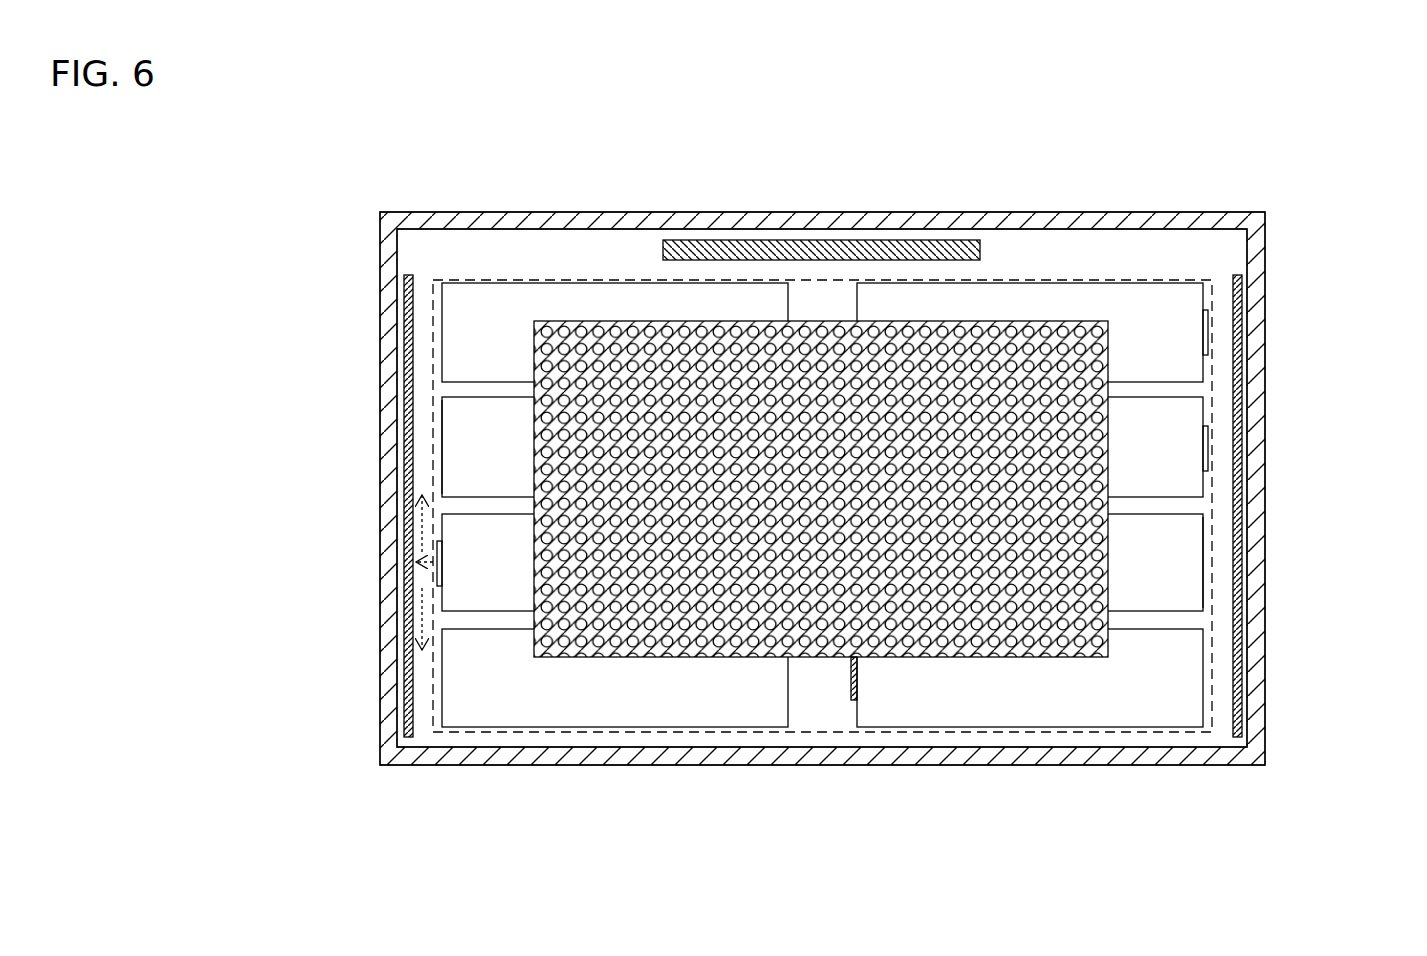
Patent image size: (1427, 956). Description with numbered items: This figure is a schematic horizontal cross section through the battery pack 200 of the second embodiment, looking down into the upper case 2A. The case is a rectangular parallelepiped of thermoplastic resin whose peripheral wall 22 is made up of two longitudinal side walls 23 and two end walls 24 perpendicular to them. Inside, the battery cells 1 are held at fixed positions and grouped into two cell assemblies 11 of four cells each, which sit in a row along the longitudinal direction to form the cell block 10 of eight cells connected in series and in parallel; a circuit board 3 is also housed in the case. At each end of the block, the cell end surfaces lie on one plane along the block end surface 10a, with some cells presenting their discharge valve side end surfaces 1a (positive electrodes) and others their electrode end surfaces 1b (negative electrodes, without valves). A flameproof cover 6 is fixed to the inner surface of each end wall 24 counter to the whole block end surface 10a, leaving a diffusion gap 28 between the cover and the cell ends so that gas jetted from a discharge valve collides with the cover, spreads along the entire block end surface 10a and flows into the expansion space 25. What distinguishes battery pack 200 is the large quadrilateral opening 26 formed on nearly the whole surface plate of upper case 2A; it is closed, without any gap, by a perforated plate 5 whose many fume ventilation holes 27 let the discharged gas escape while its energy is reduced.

The battery pack 200 is at (1256, 106).
The upper case 2A is at (1241, 192).
The peripheral wall 22 is at (330, 893).
The side wall 23 is at (723, 750).
The end wall 24 is at (383, 598).
The circuit board 3 is at (795, 240).
The flameproof cover 6 is at (410, 290).
The cell block 10 is at (645, 120).
The block end surface 10a is at (432, 478).
The diffusion gap 28 is at (422, 690).
The battery cell 1 is at (450, 418).
The discharge valve side end surface 1a is at (436, 573).
The electrode end surface 1b is at (441, 443).
The expansion space 25 is at (702, 707).
The opening 26 is at (600, 318).
The fume ventilation hole 27 is at (560, 352).
The perforated plate 5 is at (945, 650).
The cell assembly 11 is at (616, 262).